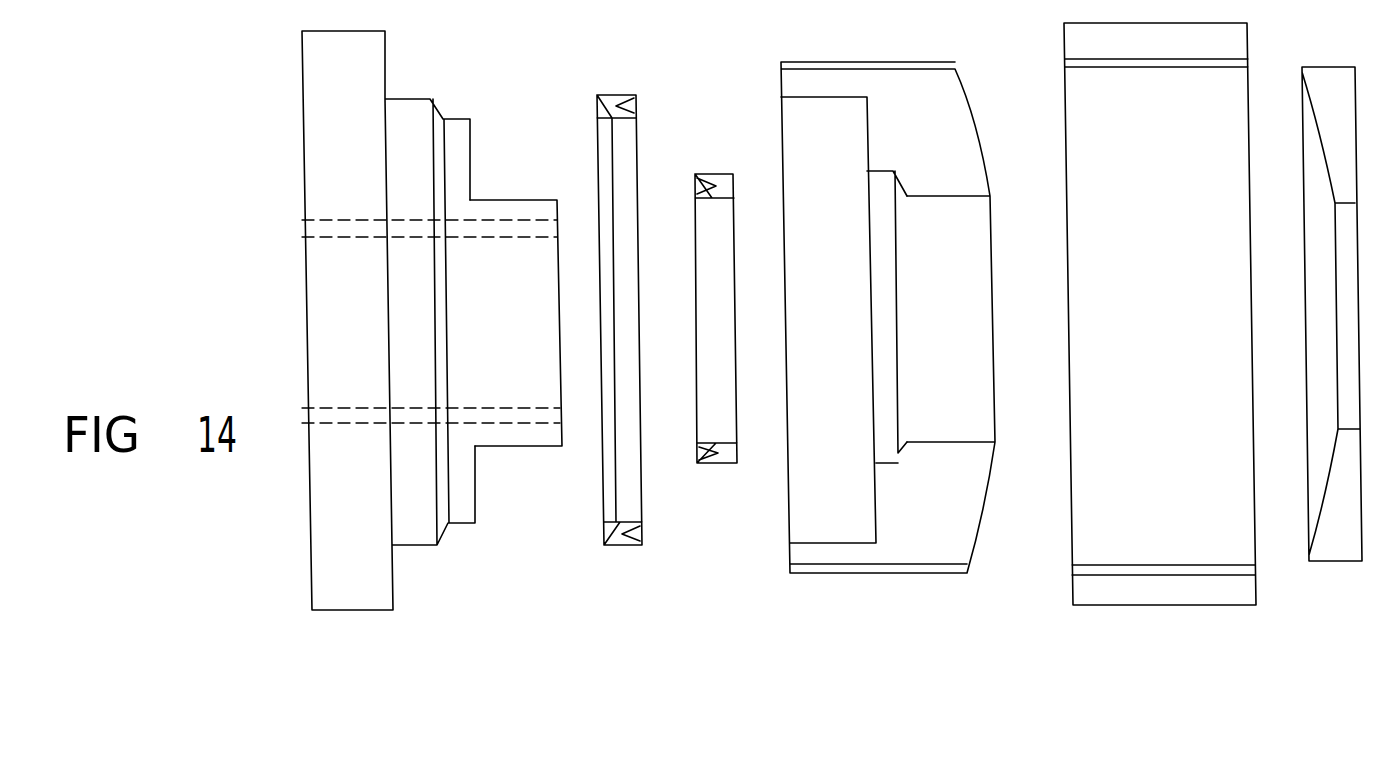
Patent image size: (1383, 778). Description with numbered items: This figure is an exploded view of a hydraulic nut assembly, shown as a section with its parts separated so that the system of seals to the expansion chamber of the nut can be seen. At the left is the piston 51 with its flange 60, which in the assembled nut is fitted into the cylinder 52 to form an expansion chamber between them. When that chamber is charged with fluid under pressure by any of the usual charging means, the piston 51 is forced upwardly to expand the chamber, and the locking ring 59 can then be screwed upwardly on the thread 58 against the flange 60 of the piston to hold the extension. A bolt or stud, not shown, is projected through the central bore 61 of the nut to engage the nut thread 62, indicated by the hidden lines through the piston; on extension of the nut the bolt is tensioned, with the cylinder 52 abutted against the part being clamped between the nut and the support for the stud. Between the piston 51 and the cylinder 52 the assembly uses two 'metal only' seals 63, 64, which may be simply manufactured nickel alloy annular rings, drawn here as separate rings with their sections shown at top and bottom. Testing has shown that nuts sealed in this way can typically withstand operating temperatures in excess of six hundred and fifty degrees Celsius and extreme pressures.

The piston 51 is at (514, 440).
The cylinder 52 is at (856, 354).
The thread 58 is at (920, 570).
The locking ring 59 is at (1092, 597).
The flange 60 is at (382, 580).
The central bore 61 is at (398, 338).
The nut thread 62 is at (333, 230).
The metal only seal 63 is at (612, 97).
The metal only seal 64 is at (716, 185).